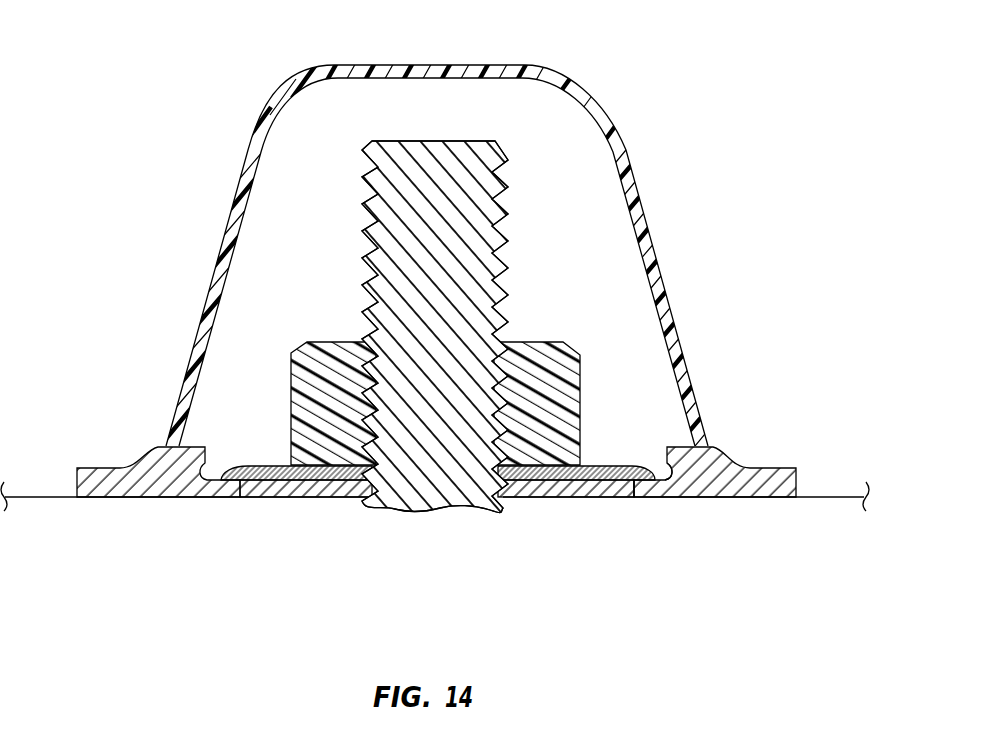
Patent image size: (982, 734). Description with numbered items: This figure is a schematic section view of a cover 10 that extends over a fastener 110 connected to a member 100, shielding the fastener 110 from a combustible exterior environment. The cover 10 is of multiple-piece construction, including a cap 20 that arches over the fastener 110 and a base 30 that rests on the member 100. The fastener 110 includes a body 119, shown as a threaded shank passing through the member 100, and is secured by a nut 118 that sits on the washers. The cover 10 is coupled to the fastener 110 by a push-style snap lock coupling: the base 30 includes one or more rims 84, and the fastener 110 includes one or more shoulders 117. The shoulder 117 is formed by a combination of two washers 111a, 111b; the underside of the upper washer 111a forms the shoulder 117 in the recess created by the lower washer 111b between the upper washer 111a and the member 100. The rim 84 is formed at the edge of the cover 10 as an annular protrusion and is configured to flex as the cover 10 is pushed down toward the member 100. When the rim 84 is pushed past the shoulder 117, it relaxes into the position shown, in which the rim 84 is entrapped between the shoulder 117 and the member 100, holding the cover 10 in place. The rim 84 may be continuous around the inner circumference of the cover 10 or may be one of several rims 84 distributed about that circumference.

The cover 10 is at (125, 130).
The cap 20 is at (640, 203).
The base 30 is at (130, 487).
The rim 84 is at (653, 478).
The member 100 is at (835, 558).
The fastener 110 is at (373, 545).
The upper washer 111a is at (250, 487).
The lower washer 111b is at (273, 487).
The shoulder 117 is at (637, 480).
The nut 118 is at (540, 447).
The body 119 is at (453, 482).